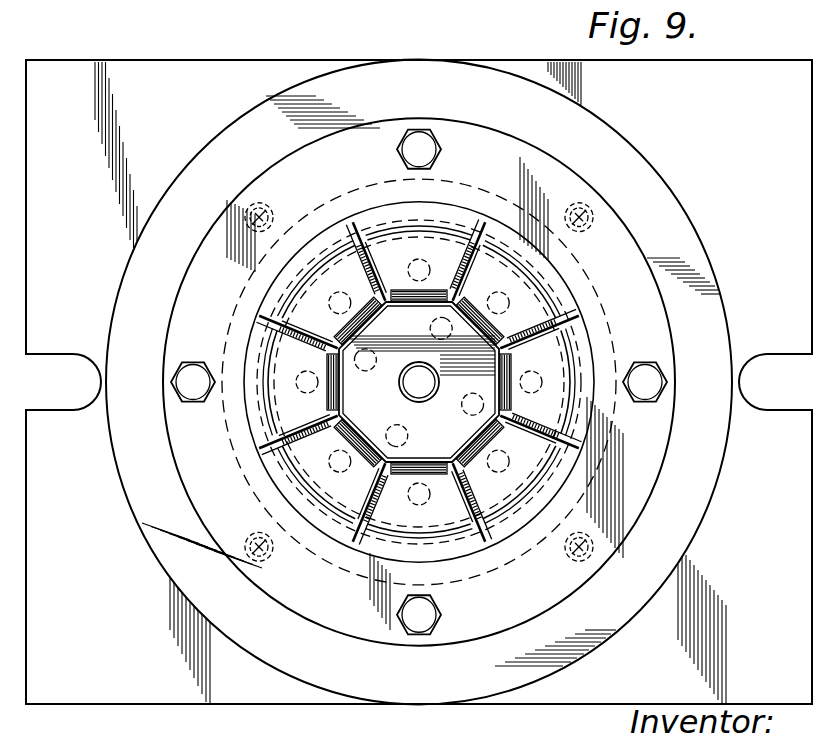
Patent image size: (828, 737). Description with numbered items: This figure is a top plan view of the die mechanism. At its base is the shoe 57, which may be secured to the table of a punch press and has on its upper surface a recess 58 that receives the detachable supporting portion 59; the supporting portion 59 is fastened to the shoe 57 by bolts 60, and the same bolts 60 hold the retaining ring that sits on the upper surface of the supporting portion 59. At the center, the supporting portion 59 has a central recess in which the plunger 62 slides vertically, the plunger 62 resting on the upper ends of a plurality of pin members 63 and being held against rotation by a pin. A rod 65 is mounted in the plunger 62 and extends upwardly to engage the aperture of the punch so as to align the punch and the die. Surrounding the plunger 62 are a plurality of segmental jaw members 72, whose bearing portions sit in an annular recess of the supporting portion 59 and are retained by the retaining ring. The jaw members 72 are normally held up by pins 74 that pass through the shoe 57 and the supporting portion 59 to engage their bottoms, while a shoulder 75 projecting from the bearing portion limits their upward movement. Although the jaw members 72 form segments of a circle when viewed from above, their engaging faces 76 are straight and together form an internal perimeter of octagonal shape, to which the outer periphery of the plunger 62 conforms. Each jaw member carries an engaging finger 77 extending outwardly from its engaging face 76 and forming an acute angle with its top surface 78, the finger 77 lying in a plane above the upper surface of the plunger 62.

The shoe 57 is at (648, 192).
The recess 58 is at (572, 167).
The detachable supporting portion 59 is at (473, 145).
The bolts 60 is at (412, 152).
The plunger 62 is at (430, 440).
The pin members 63 is at (374, 372).
The rod 65 is at (418, 380).
The segmental jaw members 72 is at (547, 483).
The pins 74 is at (430, 262).
The shoulder 75 is at (560, 342).
The engaging faces 76 is at (522, 252).
The engaging finger 77 is at (535, 290).
The top surface 78 is at (348, 272).